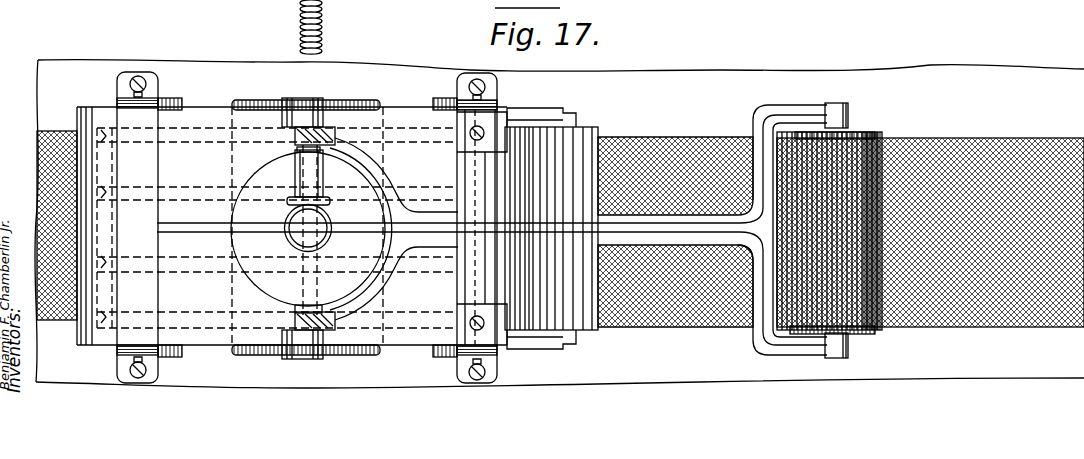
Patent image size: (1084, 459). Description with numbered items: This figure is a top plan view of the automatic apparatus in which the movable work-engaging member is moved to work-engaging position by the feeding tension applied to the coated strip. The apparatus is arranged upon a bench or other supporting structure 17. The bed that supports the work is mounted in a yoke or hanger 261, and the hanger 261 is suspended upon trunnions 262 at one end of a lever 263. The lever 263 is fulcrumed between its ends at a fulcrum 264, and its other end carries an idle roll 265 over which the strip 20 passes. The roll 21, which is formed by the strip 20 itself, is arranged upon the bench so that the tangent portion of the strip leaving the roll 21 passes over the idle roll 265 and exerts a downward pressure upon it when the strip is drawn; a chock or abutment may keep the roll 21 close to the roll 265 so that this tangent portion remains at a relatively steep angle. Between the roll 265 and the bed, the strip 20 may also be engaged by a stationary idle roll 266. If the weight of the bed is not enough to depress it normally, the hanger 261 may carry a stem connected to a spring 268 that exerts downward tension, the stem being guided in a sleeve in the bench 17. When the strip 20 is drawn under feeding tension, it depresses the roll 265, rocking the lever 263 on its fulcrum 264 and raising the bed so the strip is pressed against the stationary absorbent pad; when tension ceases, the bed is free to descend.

The bench 17 is at (961, 67).
The strip 20 is at (688, 131).
The roll 21 is at (1060, 139).
The yoke or hanger 261 is at (354, 100).
The trunnions 262 is at (305, 98).
The lever 263 is at (767, 108).
The fulcrum 264 is at (468, 139).
The idle roll 265 is at (876, 135).
The stationary idle roll 266 is at (601, 128).
The spring 268 is at (323, 22).